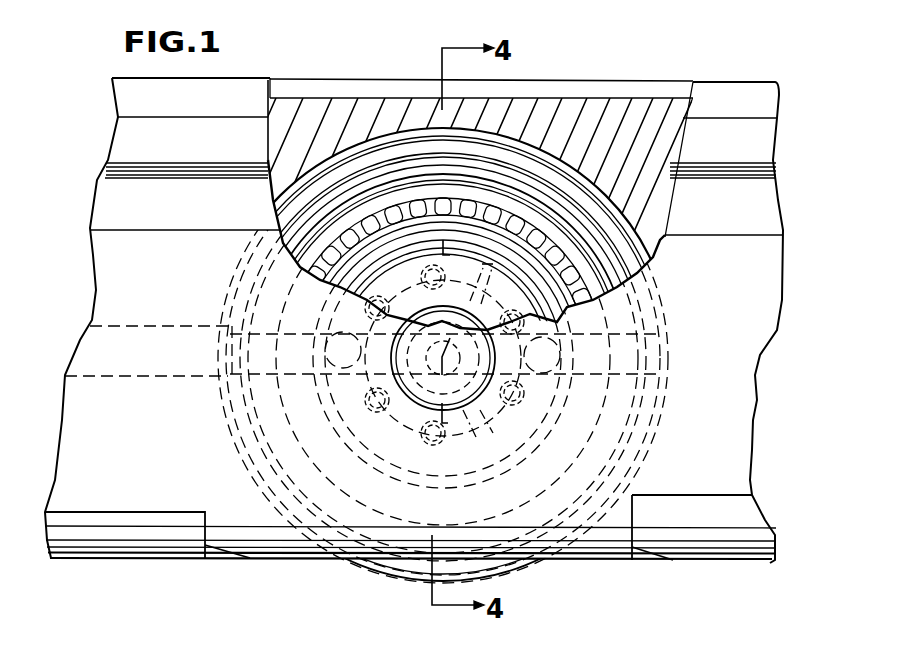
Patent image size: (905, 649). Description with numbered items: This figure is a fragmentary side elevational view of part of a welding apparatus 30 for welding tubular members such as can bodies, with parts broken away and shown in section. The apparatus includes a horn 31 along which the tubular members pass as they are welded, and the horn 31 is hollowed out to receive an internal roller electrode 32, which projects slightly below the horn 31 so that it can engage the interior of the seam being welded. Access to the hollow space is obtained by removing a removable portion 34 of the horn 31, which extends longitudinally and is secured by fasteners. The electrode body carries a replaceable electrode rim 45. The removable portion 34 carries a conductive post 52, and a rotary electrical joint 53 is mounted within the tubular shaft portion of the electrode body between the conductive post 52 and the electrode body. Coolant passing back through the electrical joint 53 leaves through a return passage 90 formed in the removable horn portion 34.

The welding apparatus 30 is at (782, 136).
The horn 31 is at (726, 107).
The roller electrode 32 is at (388, 563).
The removable portion 34 is at (245, 536).
The electrode rim 45 is at (502, 568).
The conductive post 52 is at (422, 392).
The rotary electrical joint 53 is at (498, 298).
The return passage 90 is at (185, 373).